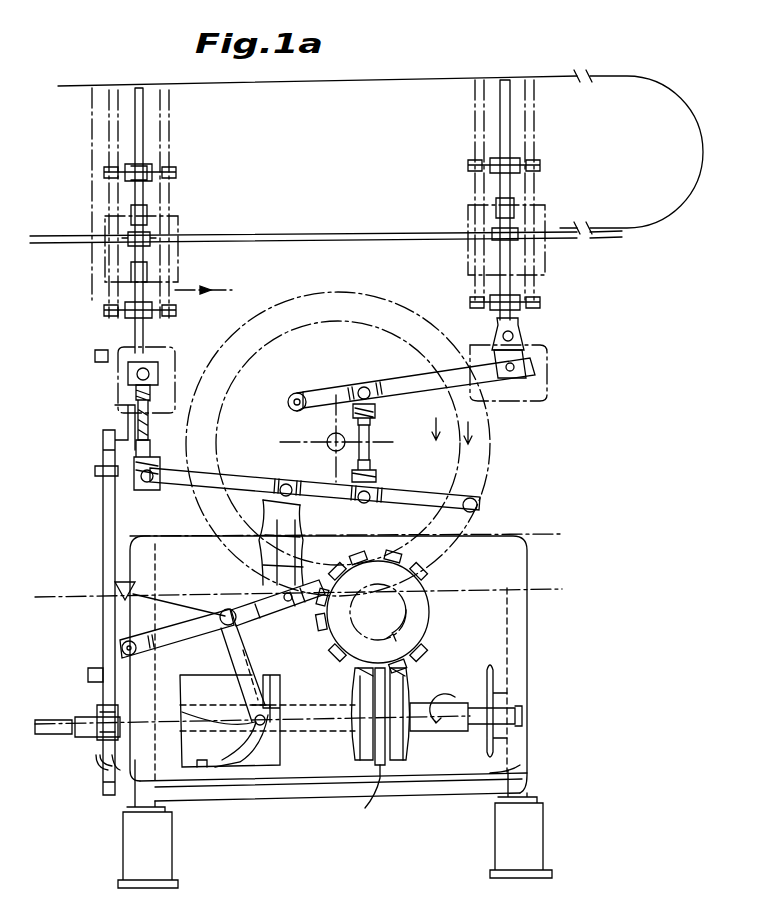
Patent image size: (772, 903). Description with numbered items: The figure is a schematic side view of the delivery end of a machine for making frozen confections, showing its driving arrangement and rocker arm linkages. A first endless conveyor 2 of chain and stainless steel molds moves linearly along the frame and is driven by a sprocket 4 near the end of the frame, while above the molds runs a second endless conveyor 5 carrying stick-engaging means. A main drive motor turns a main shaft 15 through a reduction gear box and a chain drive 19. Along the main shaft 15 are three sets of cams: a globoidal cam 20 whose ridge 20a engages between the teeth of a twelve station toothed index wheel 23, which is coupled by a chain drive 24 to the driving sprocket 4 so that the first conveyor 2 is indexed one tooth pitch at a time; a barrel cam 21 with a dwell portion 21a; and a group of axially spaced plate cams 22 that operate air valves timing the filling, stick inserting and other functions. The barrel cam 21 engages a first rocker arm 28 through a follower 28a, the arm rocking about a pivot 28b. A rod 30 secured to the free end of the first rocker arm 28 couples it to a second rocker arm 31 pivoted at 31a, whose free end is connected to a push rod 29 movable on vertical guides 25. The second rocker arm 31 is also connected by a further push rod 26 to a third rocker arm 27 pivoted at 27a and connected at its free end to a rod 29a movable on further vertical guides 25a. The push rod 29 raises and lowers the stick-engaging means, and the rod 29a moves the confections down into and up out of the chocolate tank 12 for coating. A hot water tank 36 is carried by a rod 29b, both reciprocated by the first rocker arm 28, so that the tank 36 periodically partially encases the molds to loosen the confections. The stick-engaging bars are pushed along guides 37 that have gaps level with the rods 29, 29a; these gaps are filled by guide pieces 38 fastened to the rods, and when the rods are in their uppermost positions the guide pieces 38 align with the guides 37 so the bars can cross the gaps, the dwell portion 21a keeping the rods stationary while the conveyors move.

The first endless conveyor 2 is at (240, 293).
The driving sprocket 4 is at (240, 330).
The second endless conveyor 5 is at (332, 80).
The tank 12 is at (545, 378).
The main shaft 15 is at (422, 703).
The chain drive 19 is at (520, 633).
The globoidal cam 20 is at (406, 744).
The ridge 20a is at (384, 801).
The barrel cam 21 is at (270, 748).
The dwell portion 21a is at (270, 686).
The plate cams 22 is at (90, 760).
The toothed index wheel 23 is at (431, 632).
The chain drive 24 is at (430, 550).
The vertical guides 25 is at (170, 196).
The further vertical guides 25a is at (470, 255).
The push rod 26 is at (370, 452).
The third rocker arm 27 is at (476, 346).
The pivot 27a is at (297, 392).
The first rocker arm 28 is at (200, 638).
The follower 28a is at (244, 670).
The pivot 28b is at (235, 594).
The push rod 29 is at (148, 335).
The rod 29a is at (515, 285).
The rod 29b is at (103, 576).
The rod 30 is at (258, 556).
The second rocker arm 31 is at (240, 484).
The pivot 31a is at (477, 506).
The hot water tank 36 is at (152, 412).
The guides 37 is at (363, 243).
The guide pieces 38 is at (152, 240).